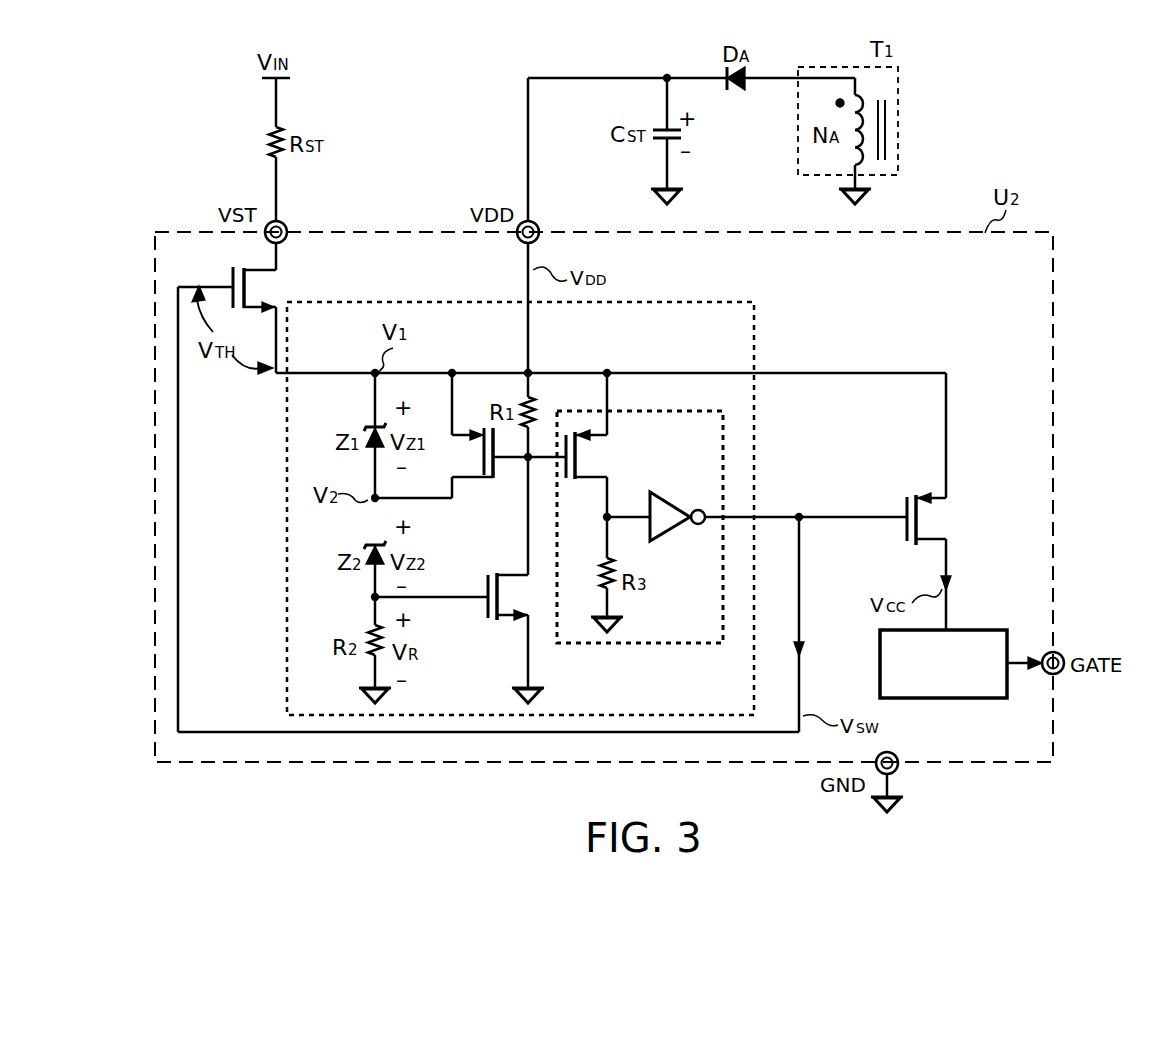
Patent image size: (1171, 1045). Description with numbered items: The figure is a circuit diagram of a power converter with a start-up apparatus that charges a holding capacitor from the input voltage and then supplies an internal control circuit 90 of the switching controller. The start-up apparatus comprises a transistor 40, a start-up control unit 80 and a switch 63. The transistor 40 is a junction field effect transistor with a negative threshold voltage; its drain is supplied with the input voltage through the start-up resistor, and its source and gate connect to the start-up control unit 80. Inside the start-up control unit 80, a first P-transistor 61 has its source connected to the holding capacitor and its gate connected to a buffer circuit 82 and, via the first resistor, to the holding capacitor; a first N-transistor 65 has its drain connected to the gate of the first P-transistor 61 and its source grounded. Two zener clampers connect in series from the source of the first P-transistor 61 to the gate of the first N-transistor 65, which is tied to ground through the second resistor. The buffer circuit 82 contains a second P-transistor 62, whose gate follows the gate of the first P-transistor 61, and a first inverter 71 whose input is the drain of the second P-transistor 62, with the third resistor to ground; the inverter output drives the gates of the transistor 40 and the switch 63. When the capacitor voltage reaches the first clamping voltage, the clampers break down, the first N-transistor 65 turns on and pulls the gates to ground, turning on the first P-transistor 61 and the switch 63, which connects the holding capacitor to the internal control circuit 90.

The transistor 40 is at (283, 288).
The first P-transistor 61 is at (493, 485).
The second P-transistor 62 is at (608, 452).
The switch 63 is at (945, 515).
The first N-transistor 65 is at (495, 625).
The first inverter 71 is at (672, 533).
The start-up control unit 80 is at (756, 322).
The buffer circuit 82 is at (703, 647).
The internal control circuit 90 is at (980, 629).